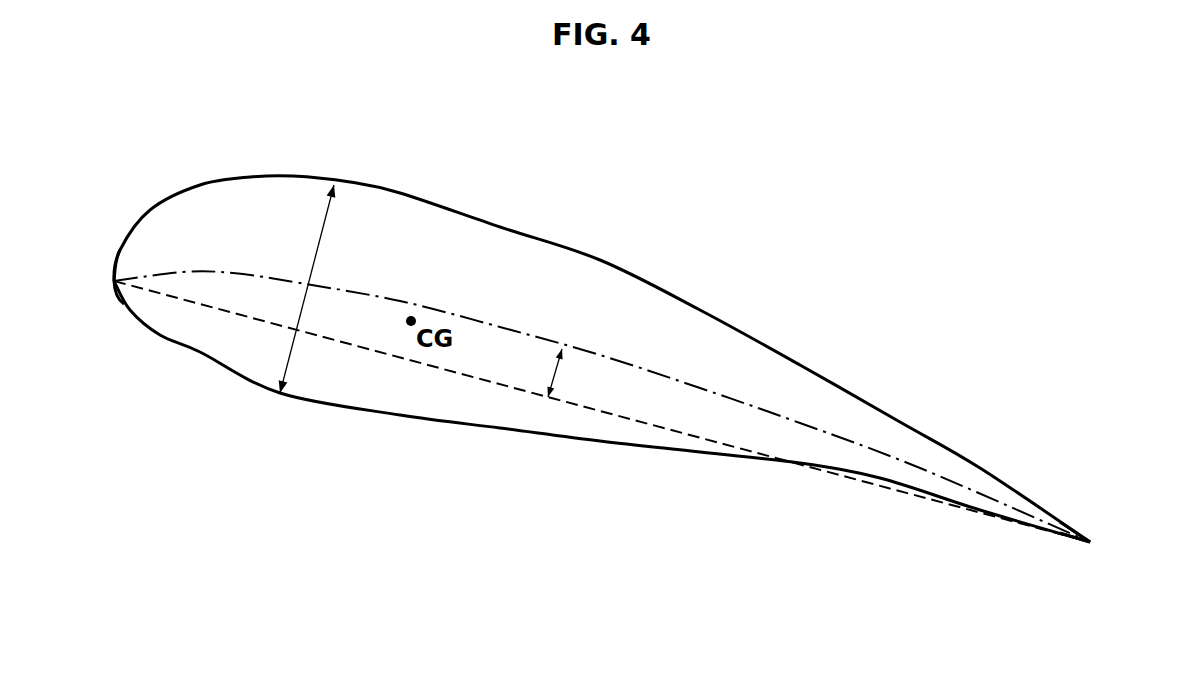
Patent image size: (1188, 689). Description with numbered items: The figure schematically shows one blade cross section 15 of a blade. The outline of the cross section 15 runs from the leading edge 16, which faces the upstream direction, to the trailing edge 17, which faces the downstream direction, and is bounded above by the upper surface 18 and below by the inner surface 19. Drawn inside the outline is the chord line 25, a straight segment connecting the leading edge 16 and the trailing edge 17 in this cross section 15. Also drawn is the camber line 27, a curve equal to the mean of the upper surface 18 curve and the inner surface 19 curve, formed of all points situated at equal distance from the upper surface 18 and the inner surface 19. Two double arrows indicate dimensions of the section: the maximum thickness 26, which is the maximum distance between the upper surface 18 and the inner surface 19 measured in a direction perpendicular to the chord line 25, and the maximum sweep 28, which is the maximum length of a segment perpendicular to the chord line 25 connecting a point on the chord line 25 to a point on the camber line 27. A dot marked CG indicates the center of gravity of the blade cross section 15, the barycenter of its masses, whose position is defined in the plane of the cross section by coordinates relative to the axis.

The blade cross section 15 is at (600, 388).
The leading edge 16 is at (110, 282).
The trailing edge 17 is at (1096, 547).
The upper surface 18 is at (549, 231).
The inner surface 19 is at (498, 432).
The chord line 25 is at (480, 378).
The maximum thickness 26 is at (307, 302).
The camber line 27 is at (391, 294).
The maximum sweep 28 is at (558, 370).